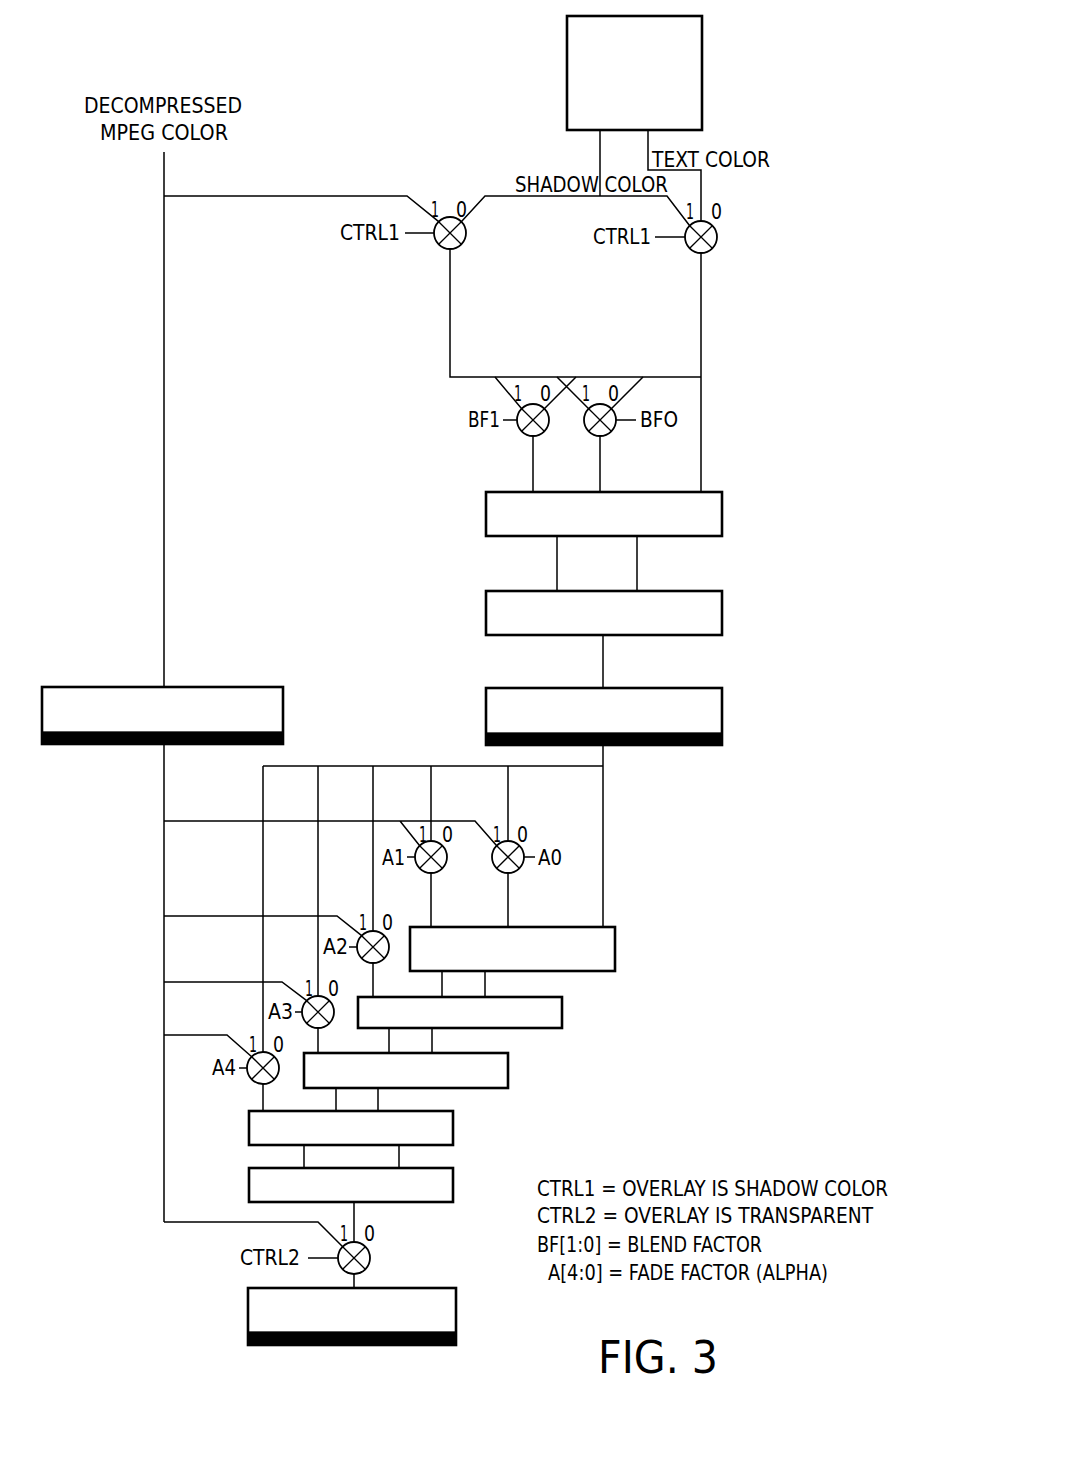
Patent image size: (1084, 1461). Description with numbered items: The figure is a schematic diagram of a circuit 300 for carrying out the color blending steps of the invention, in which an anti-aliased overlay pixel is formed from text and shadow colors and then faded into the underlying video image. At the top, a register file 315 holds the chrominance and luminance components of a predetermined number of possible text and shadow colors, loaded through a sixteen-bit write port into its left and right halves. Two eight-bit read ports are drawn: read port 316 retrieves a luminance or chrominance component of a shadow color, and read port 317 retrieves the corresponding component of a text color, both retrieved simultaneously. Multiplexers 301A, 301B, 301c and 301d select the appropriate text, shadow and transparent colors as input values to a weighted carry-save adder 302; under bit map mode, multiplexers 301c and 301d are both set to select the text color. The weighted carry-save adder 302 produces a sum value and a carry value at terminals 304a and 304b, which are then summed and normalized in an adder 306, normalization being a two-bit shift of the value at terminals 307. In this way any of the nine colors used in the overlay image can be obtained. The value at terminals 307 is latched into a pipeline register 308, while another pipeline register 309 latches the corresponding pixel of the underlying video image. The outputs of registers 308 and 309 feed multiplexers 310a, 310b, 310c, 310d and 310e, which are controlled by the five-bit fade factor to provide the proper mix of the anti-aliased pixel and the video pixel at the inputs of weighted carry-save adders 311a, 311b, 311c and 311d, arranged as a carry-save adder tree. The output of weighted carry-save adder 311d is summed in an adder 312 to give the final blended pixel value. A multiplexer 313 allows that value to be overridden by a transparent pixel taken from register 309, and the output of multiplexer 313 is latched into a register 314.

The circuit 300 is at (822, 136).
The multiplexer 301A is at (716, 245).
The multiplexer 301B is at (463, 241).
The multiplexer 301c is at (541, 435).
The multiplexer 301d is at (608, 435).
The weighted carry-save adder 302 is at (722, 511).
The sum output terminal 304a is at (556, 574).
The carry output terminal 304b is at (637, 574).
The adder 306 is at (722, 609).
The output terminals 307 is at (603, 677).
The pipeline register 308 is at (722, 711).
The pipeline register 309 is at (283, 709).
The multiplexer 310a is at (517, 871).
The multiplexer 310b is at (440, 871).
The multiplexer 310c is at (383, 961).
The multiplexer 310d is at (328, 1026).
The multiplexer 310e is at (273, 1082).
The weighted carry-save adder 311a is at (615, 951).
The weighted carry-save adder 311b is at (562, 1012).
The weighted carry-save adder 311c is at (508, 1070).
The weighted carry-save adder 311d is at (453, 1129).
The adder 312 is at (453, 1187).
The multiplexer 313 is at (370, 1258).
The register 314 is at (456, 1312).
The register file 315 is at (702, 86).
The read port 316 is at (600, 170).
The read port 317 is at (648, 145).